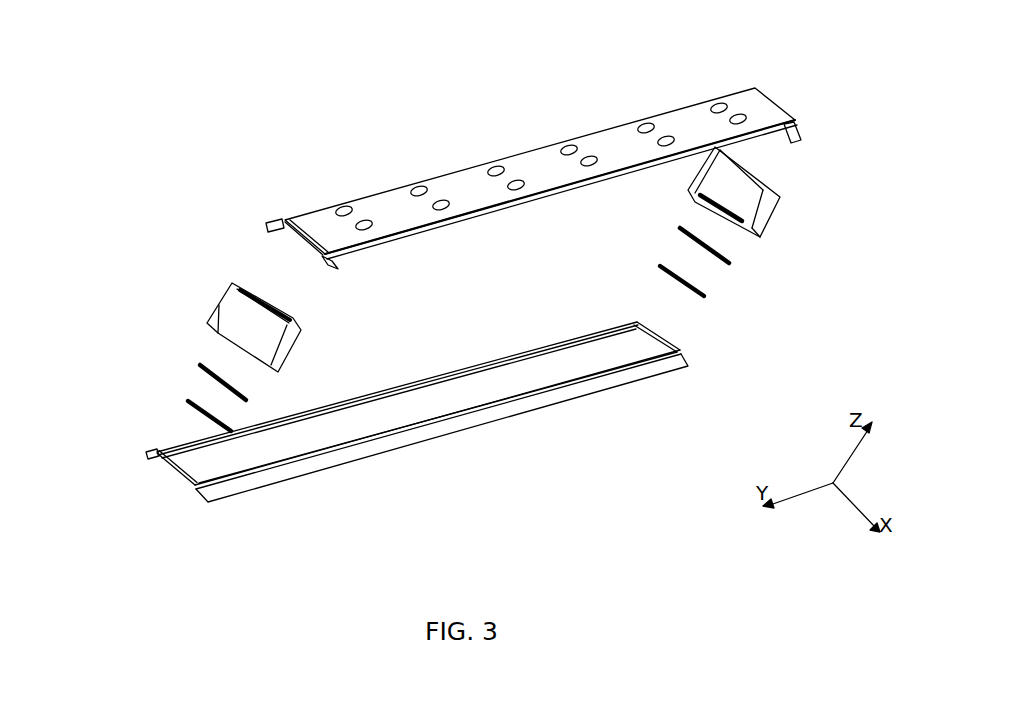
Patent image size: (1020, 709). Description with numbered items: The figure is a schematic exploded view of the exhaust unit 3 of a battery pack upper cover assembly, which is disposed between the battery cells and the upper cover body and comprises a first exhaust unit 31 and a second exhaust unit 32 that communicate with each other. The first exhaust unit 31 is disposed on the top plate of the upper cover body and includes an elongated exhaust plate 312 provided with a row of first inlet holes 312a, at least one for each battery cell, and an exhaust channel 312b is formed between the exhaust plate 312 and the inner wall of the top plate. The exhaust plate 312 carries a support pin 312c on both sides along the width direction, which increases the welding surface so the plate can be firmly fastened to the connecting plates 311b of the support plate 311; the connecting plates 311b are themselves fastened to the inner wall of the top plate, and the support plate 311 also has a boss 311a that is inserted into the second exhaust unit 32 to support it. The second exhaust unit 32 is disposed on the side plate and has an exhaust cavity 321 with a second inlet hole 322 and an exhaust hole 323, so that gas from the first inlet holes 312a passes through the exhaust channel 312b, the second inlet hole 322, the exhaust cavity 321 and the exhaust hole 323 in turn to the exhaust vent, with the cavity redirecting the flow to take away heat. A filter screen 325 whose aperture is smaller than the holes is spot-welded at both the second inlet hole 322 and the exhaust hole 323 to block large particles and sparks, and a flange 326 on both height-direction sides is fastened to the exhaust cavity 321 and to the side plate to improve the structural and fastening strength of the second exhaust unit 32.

The exhaust unit 3 is at (452, 57).
The first exhaust unit 31 is at (619, 417).
The support plate 311 is at (442, 437).
The boss 311a is at (165, 465).
The connecting plate 311b is at (147, 452).
The exhaust plate 312 is at (452, 183).
The first inlet hole 312a is at (566, 146).
The exhaust channel 312b is at (300, 236).
The support pin 312c is at (276, 221).
The second exhaust unit 32 is at (110, 307).
The exhaust cavity 321 is at (740, 190).
The second inlet hole 322 is at (737, 228).
The exhaust hole 323 is at (252, 290).
The filter screen 325 is at (201, 366).
The flange 326 is at (218, 318).